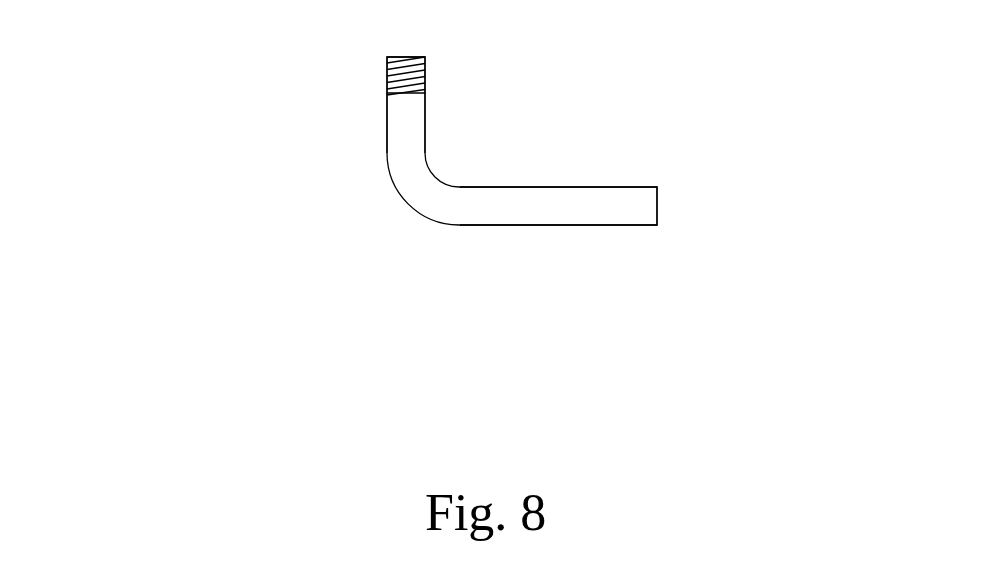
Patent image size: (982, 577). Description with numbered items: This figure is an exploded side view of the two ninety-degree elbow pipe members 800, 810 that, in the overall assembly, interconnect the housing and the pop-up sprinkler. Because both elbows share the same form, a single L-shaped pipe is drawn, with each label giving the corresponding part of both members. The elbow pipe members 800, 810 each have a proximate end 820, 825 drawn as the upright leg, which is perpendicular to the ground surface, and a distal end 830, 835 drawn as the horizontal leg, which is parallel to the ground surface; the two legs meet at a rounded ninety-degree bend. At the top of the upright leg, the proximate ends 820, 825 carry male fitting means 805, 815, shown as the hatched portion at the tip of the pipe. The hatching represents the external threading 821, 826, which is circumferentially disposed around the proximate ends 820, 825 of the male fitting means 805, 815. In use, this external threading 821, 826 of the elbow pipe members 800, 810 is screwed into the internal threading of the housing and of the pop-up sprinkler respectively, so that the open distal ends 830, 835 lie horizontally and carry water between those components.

The 90 degree elbow pipe member 800 is at (485, 213).
The 90 degree elbow pipe member 810 is at (485, 213).
The male fitting means 805 is at (400, 58).
The male fitting means 815 is at (400, 58).
The proximate end 820 is at (577, 114).
The proximate end 825 is at (426, 105).
The external threading 821 is at (400, 58).
The external threading 826 is at (275, 43).
The distal end 830 is at (695, 296).
The distal end 835 is at (628, 225).